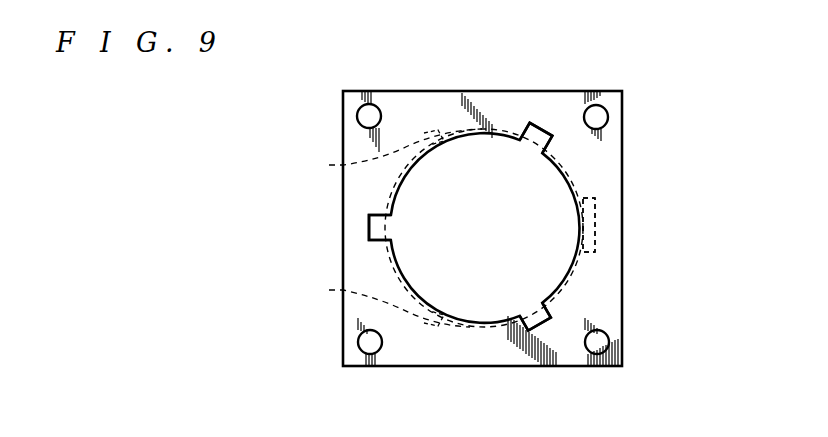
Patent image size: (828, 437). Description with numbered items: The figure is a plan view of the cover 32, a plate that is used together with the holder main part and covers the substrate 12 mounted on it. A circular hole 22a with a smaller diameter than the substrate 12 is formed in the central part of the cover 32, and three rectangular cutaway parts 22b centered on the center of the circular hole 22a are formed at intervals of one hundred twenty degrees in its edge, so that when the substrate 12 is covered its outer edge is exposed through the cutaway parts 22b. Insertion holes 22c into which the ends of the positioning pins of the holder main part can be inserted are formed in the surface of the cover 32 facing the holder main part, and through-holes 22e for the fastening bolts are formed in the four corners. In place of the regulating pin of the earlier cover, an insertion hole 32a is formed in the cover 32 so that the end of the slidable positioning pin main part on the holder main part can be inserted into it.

The cover 32 is at (500, 91).
The insertion hole 32a is at (596, 230).
The substrate 12 is at (596, 199).
The circular hole 22a is at (553, 258).
The rectangular cutaway parts 22b is at (533, 141).
The insertion holes 22c is at (382, 228).
The through-holes 22e is at (376, 116).